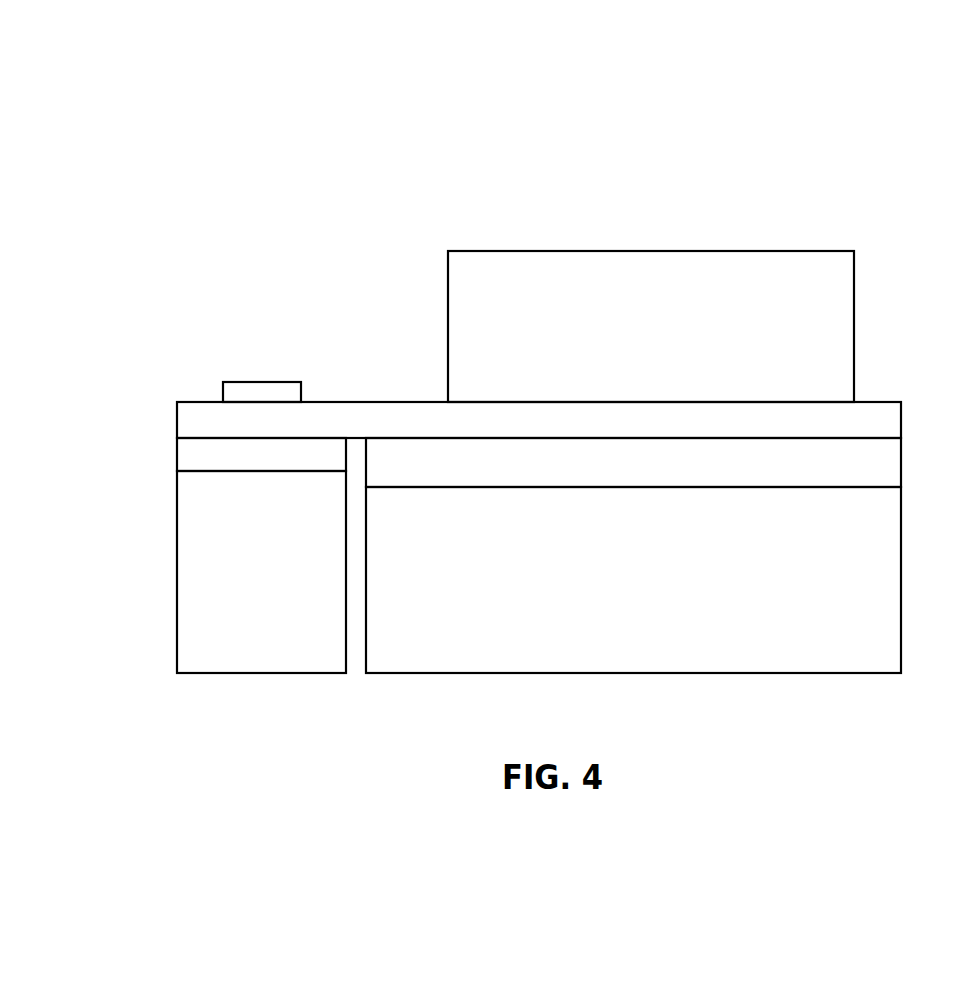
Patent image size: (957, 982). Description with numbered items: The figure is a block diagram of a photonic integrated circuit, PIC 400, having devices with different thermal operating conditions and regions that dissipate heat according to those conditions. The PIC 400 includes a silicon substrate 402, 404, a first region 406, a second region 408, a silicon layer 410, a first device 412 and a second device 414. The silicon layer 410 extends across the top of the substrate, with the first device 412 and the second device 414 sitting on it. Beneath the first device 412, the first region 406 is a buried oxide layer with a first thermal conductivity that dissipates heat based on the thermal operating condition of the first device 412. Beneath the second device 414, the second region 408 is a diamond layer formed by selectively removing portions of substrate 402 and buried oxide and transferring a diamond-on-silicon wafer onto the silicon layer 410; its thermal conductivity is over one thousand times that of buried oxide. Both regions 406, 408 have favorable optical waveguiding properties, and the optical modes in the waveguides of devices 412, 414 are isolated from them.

The PIC 400 is at (599, 96).
The silicon substrate 402 is at (283, 547).
The silicon substrate 404 is at (648, 582).
The first region 406 is at (283, 467).
The second region 408 is at (648, 471).
The silicon layer 410 is at (383, 430).
The first device 412 is at (222, 388).
The second device 414 is at (680, 337).